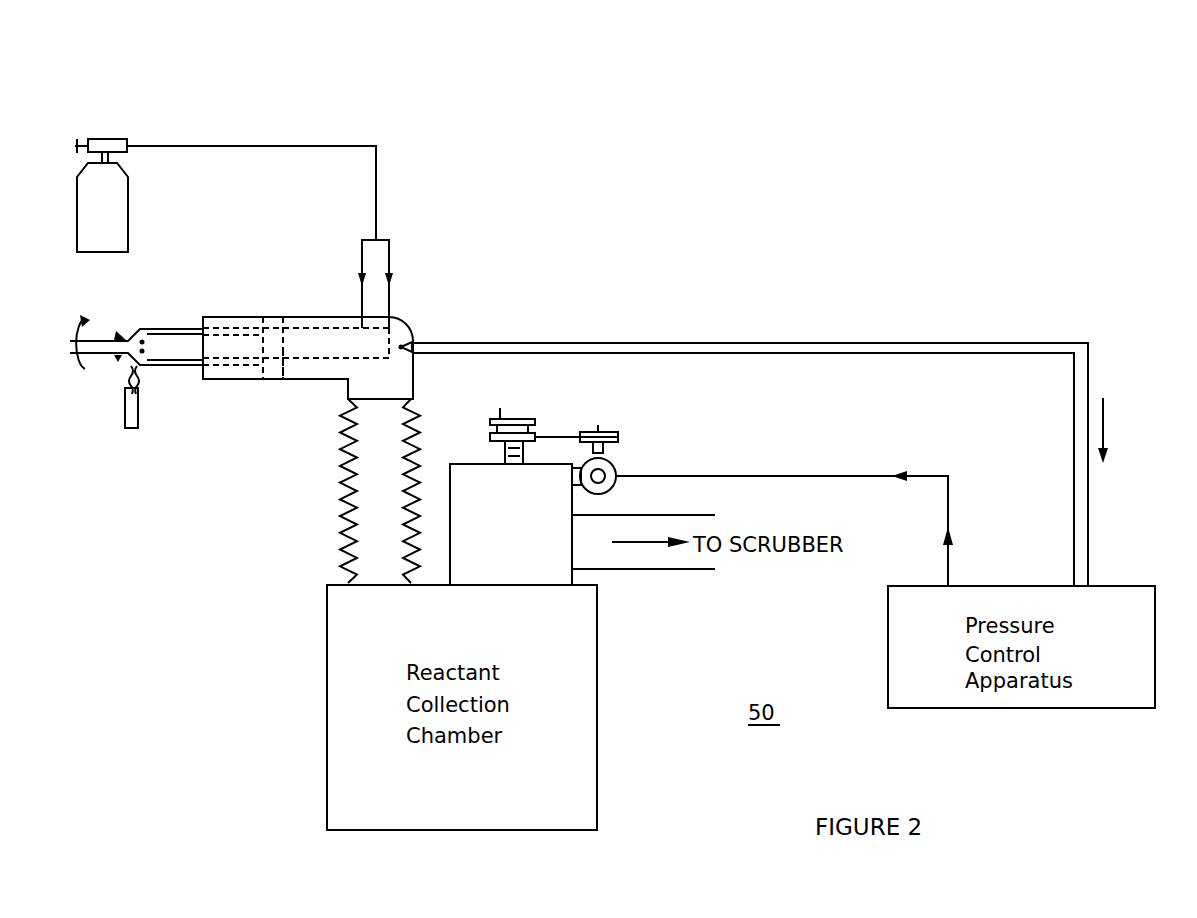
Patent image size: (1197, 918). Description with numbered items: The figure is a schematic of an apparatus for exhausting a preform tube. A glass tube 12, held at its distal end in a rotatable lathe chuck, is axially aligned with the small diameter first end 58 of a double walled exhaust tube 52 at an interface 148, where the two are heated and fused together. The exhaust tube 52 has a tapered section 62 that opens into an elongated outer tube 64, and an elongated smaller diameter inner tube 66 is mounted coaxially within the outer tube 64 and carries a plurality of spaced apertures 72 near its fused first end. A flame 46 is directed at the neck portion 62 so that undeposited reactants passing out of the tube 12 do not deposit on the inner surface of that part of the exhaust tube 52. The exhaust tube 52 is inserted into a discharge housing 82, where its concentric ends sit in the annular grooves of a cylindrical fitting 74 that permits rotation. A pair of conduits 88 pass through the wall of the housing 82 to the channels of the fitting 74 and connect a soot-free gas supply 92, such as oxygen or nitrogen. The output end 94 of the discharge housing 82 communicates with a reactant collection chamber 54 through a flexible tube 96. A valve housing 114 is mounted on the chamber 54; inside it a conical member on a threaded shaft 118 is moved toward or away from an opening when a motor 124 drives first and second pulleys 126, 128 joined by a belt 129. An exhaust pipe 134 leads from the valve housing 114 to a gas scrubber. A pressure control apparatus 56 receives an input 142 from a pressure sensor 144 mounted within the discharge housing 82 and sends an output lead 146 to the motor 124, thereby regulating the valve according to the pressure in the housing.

The glass tube 12 is at (95, 355).
The flame 46 is at (137, 375).
The double walled exhaust tube 52 is at (147, 332).
The reactant collection chamber 54 is at (598, 723).
The pressure control apparatus 56 is at (1132, 585).
The small diameter first end 58 is at (126, 337).
The tapered section 62 is at (140, 326).
The outer tube 64 is at (191, 363).
The inner tube 66 is at (197, 363).
The spaced apertures 72 is at (144, 340).
The cylindrical fitting 74 is at (283, 363).
The discharge housing 82 is at (308, 316).
The conduits 88 is at (360, 262).
The soot-free gas supply 92 is at (128, 205).
The output end 94 is at (388, 401).
The flexible tube 96 is at (350, 505).
The valve housing 114 is at (463, 463).
The threaded shaft 118 is at (524, 453).
The motor 124 is at (616, 467).
The first pulley 126 is at (618, 433).
The second pulley 128 is at (495, 438).
The belt 129 is at (568, 435).
The exhaust pipe 134 is at (665, 571).
The input 142 is at (843, 342).
The pressure sensor 144 is at (402, 346).
The output lead 146 is at (846, 474).
The interface 148 is at (118, 335).